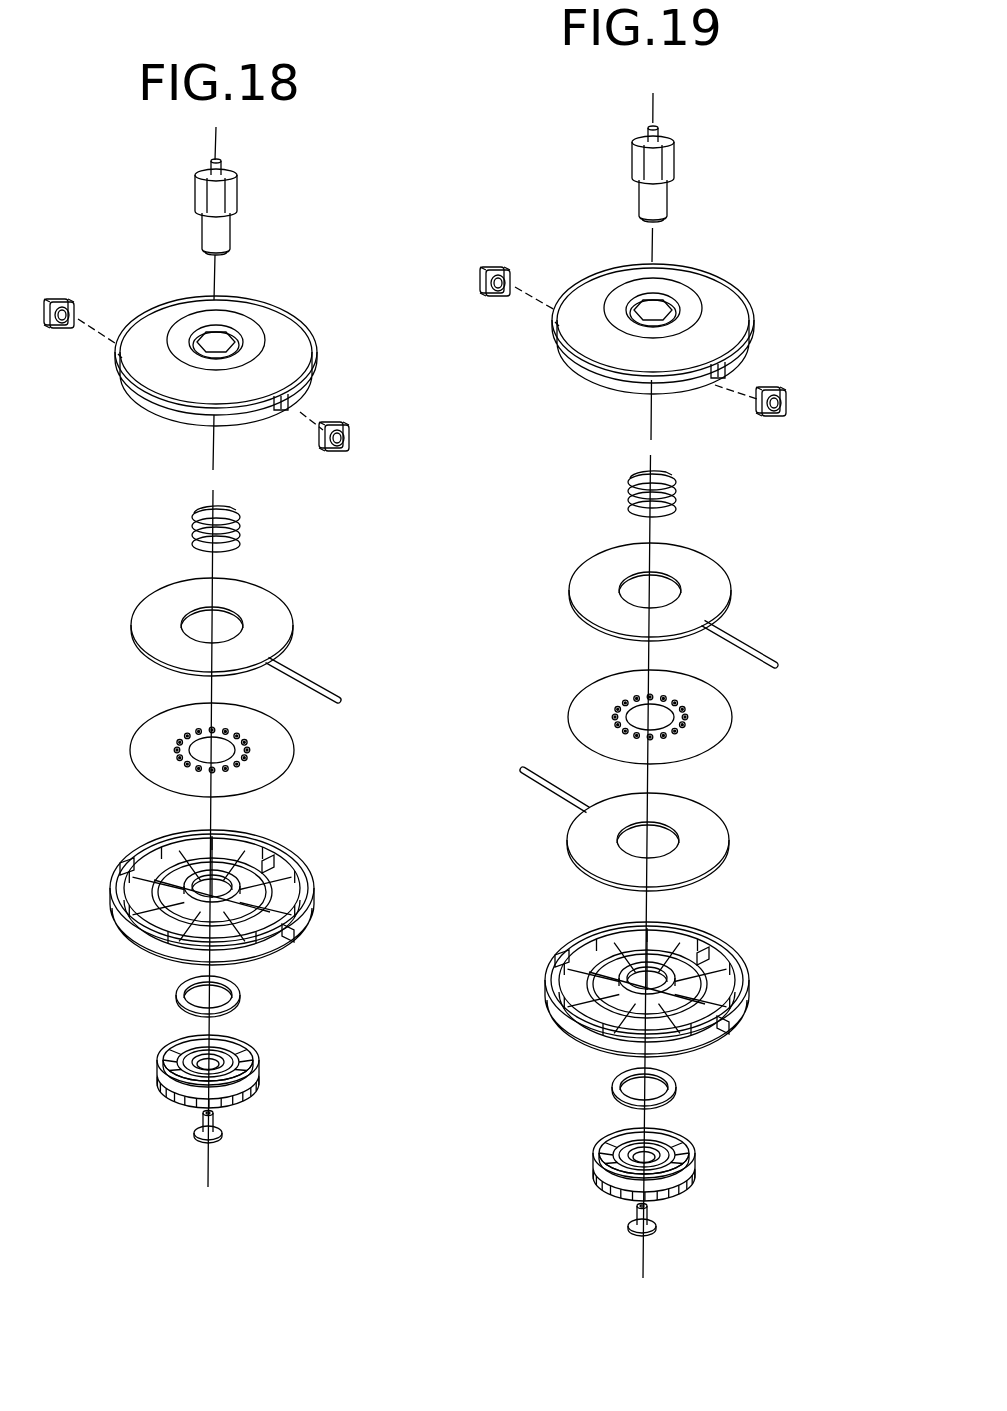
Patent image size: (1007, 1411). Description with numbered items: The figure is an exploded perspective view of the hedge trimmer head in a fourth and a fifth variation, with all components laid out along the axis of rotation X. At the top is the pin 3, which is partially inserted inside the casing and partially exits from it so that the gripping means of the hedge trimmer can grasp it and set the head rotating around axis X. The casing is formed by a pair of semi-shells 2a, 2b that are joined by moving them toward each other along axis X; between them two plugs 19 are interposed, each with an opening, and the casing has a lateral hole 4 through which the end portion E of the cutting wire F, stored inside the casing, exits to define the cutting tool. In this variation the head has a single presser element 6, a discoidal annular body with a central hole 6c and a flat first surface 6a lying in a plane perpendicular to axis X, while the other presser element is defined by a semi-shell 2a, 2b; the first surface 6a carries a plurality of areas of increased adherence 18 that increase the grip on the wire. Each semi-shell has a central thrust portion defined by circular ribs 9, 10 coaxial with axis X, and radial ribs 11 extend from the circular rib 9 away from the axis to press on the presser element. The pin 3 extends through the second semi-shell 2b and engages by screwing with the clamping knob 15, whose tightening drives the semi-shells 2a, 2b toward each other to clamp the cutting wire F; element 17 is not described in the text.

In FIG. 18, the pin 3 is at (222, 229).
In FIG. 19, the pin 3 is at (659, 200).
In FIG. 18, the first semi-shell 2a is at (282, 334).
In FIG. 19, the first semi-shell 2a is at (719, 300).
In FIG. 18, the second semi-shell 2b is at (237, 897).
In FIG. 19, the second semi-shell 2b is at (674, 989).
In FIG. 18, the plug 19 is at (340, 422).
In FIG. 19, the plug 19 is at (776, 388).
In FIG. 18, the lateral hole 4 is at (352, 440).
In FIG. 19, the lateral hole 4 is at (788, 405).
In FIG. 18, the axis of rotation X is at (213, 476).
In FIG. 19, the axis of rotation X is at (651, 443).
In FIG. 18, the cutting wire F is at (292, 595).
In FIG. 19, the cutting wire F is at (735, 833).
In FIG. 18, the end portion of the cutting wire E is at (321, 679).
In FIG. 19, the end portion of the cutting wire E is at (522, 772).
In FIG. 18, the presser element 6 is at (233, 731).
In FIG. 19, the presser element 6 is at (670, 698).
In FIG. 18, the first surface 6a is at (157, 732).
In FIG. 19, the first surface 6a is at (595, 700).
In FIG. 18, the central hole 6c is at (208, 742).
In FIG. 19, the central hole 6c is at (646, 710).
In FIG. 18, the areas of increased adherence 18 is at (208, 779).
In FIG. 19, the areas of increased adherence 18 is at (646, 746).
In FIG. 18, the radial ribs 11 is at (268, 865).
In FIG. 19, the radial ribs 11 is at (706, 958).
In FIG. 18, the circular rib 9 is at (176, 890).
In FIG. 19, the circular rib 9 is at (613, 980).
In FIG. 18, the circular rib 10 is at (181, 918).
In FIG. 19, the circular rib 10 is at (621, 1010).
In FIG. 18, the clamping knob 15 is at (256, 1060).
In FIG. 19, the clamping knob 15 is at (696, 1153).
In FIG. 18, the pin 17 is at (216, 1132).
In FIG. 19, the pin 17 is at (652, 1226).